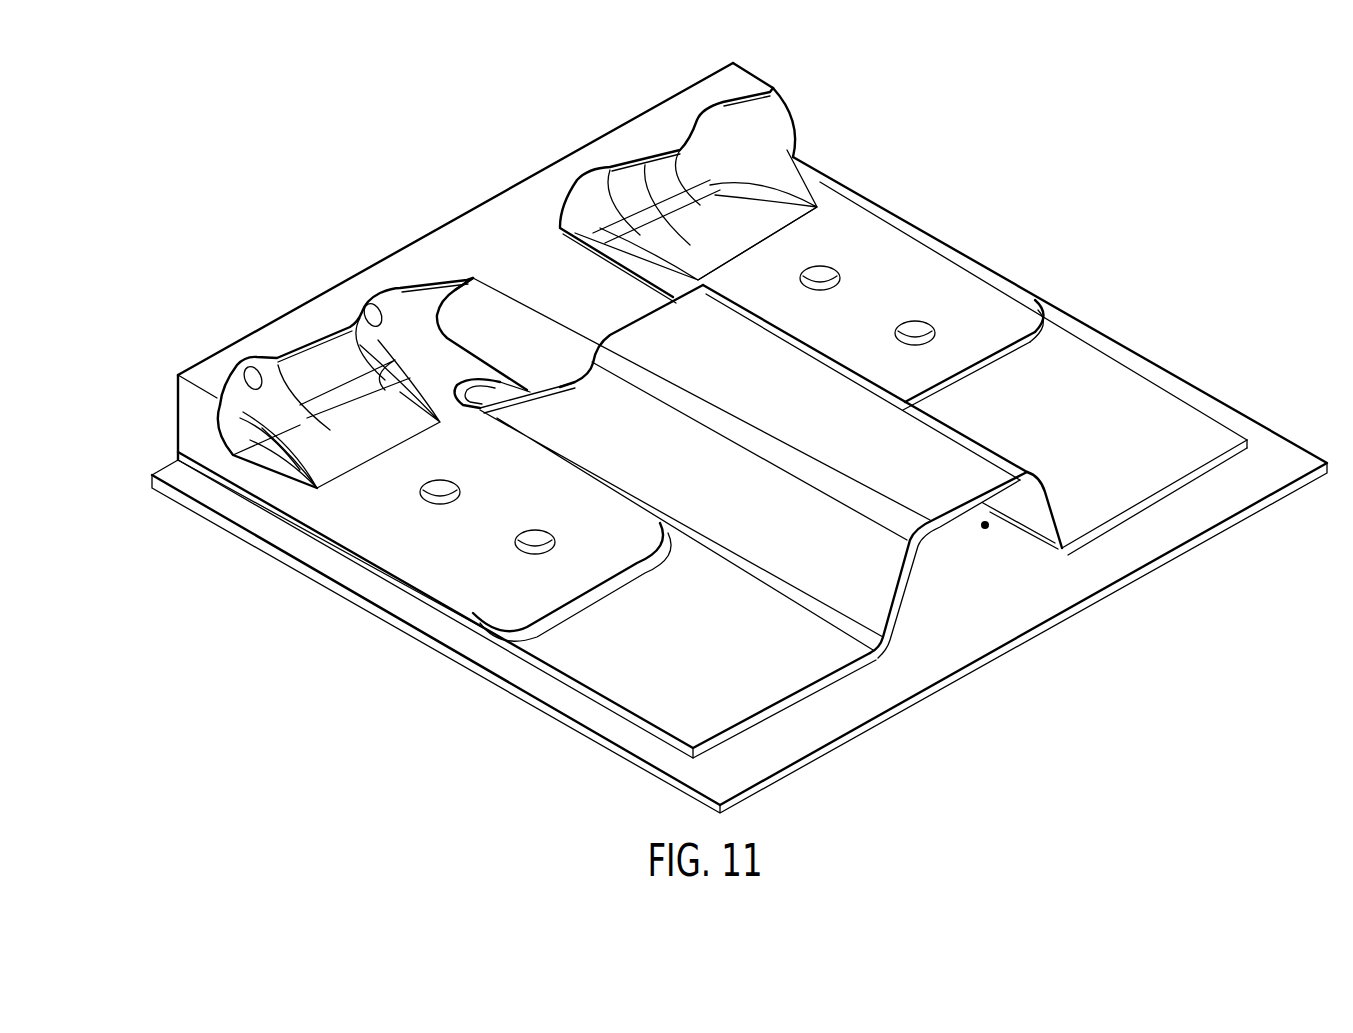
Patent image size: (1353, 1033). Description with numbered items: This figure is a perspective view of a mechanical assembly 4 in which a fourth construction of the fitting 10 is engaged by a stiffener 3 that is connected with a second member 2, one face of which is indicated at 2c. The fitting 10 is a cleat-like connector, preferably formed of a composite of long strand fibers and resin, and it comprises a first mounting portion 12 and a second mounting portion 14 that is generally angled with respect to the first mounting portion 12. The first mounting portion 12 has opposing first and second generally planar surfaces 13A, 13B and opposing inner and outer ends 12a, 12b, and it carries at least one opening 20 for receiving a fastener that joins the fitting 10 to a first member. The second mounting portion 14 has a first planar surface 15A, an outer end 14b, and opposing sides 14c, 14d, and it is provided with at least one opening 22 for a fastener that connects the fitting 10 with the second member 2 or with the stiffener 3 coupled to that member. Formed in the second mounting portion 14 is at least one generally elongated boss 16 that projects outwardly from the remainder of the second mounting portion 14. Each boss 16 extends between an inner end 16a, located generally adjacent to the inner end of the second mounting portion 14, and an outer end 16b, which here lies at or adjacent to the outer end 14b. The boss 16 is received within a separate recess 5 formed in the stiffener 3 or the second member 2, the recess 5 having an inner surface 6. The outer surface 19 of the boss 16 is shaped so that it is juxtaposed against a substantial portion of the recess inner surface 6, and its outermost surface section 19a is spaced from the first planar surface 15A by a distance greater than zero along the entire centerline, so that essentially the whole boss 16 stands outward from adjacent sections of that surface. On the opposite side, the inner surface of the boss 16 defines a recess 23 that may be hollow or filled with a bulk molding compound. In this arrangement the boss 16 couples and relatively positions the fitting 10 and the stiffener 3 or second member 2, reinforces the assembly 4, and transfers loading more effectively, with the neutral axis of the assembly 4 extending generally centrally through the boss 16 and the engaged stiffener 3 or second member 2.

The second member 2 is at (878, 738).
The side face of base plate 2c is at (190, 420).
The stiffener 3 is at (597, 707).
The mechanical assembly 4 is at (1215, 305).
The recess 5 is at (988, 528).
The inner surface 6 is at (957, 523).
The fitting 10 is at (885, 165).
The first mounting portion 12 is at (653, 98).
The inner end of first mounting portion 12a is at (288, 440).
The outer end of first mounting portion 12b is at (737, 75).
The first planar surface 13A is at (753, 122).
The second planar surface 13B is at (323, 290).
The second mounting portion 14 is at (425, 608).
The outer end of second mounting portion 14b is at (1010, 350).
The side of second mounting portion 14c is at (387, 565).
The side of second mounting portion 14d is at (955, 252).
The first planar surface of second mounting portion 15A is at (917, 245).
The elongated boss 16 is at (537, 232).
The inner end of boss 16a is at (513, 272).
The outer end of boss 16b is at (812, 395).
The outer surface of boss 19 is at (548, 376).
The outermost surface section 19a is at (607, 300).
The opening 20 is at (258, 381).
The opening 22 is at (910, 328).
The recess 23 is at (532, 540).